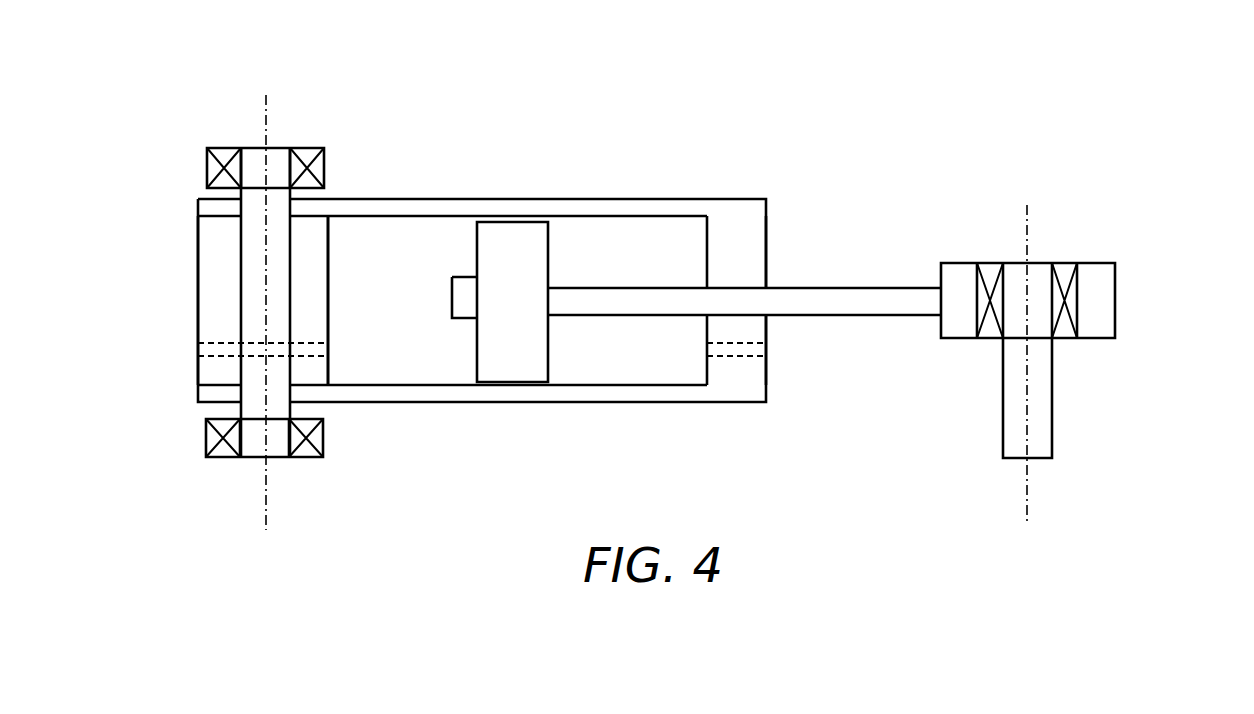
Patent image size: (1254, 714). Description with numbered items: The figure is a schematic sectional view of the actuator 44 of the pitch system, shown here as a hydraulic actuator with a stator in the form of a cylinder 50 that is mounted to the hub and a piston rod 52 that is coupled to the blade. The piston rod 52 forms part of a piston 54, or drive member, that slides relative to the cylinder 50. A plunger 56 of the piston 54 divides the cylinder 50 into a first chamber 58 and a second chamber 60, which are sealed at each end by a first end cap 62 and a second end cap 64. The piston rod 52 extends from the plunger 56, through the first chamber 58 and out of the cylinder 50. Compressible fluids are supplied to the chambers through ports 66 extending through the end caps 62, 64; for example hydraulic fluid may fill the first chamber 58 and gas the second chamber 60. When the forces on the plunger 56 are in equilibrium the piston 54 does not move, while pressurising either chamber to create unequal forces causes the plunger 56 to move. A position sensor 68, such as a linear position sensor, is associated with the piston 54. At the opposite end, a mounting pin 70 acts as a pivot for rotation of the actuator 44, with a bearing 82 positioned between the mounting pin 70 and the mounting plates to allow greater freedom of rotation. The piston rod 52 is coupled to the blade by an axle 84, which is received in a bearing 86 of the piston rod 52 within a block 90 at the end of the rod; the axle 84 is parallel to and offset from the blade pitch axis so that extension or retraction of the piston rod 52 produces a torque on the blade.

The actuator 44 is at (732, 118).
The cylinder 50 is at (630, 398).
The piston rod 52 is at (852, 300).
The piston 54 is at (522, 237).
The plunger 56 is at (513, 299).
The first chamber 58 is at (626, 255).
The second chamber 60 is at (393, 302).
The first end cap 62 is at (753, 237).
The second end cap 64 is at (203, 240).
The ports 66 is at (202, 350).
The position sensor 68 is at (463, 308).
The mounting pin 70 is at (275, 157).
The bearing 82 is at (323, 160).
The axle 84 is at (1042, 418).
The bearing 86 is at (1062, 272).
The pivot block 90 is at (1108, 297).